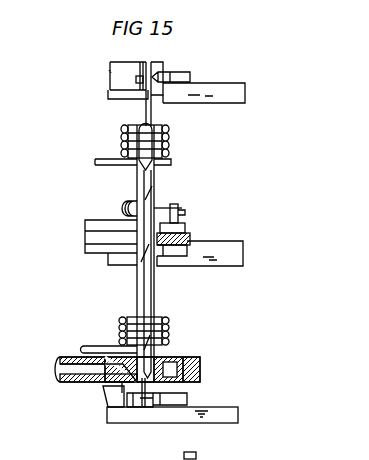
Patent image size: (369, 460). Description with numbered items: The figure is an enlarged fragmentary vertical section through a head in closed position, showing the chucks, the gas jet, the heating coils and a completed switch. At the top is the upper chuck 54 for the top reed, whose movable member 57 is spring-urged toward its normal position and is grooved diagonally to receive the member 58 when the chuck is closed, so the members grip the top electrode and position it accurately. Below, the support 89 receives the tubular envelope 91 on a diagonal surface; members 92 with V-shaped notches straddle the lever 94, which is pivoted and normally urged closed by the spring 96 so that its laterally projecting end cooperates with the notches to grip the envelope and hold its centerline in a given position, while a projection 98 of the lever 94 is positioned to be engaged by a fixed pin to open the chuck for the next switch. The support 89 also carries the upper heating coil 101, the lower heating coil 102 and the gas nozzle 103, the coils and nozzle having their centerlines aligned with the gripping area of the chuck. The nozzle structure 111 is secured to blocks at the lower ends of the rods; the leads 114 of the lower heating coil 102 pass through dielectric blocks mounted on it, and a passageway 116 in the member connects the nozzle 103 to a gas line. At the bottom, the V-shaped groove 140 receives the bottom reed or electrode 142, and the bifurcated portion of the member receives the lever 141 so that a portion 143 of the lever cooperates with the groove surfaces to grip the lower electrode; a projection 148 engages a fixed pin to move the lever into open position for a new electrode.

The upper chuck 54 is at (201, 44).
The movable chuck member 57 is at (143, 62).
The chuck member 58 is at (192, 77).
The support 89 is at (93, 240).
The tubular envelope 91 is at (140, 185).
The notched chuck members 92 is at (185, 226).
The lever 94 is at (192, 242).
The spring 96 is at (122, 209).
The projection 98 is at (228, 259).
The upper heating coil 101 is at (170, 147).
The lower heating coil 102 is at (170, 328).
The gas nozzle 103 is at (158, 358).
The nozzle structure 111 is at (66, 357).
The leads 114 is at (107, 346).
The passageway 116 is at (73, 368).
The V-shaped groove 140 is at (107, 413).
The lever 141 is at (168, 408).
The bottom reed or electrode 142 is at (114, 385).
The lever portion 143 is at (152, 408).
The projection 148 is at (213, 417).